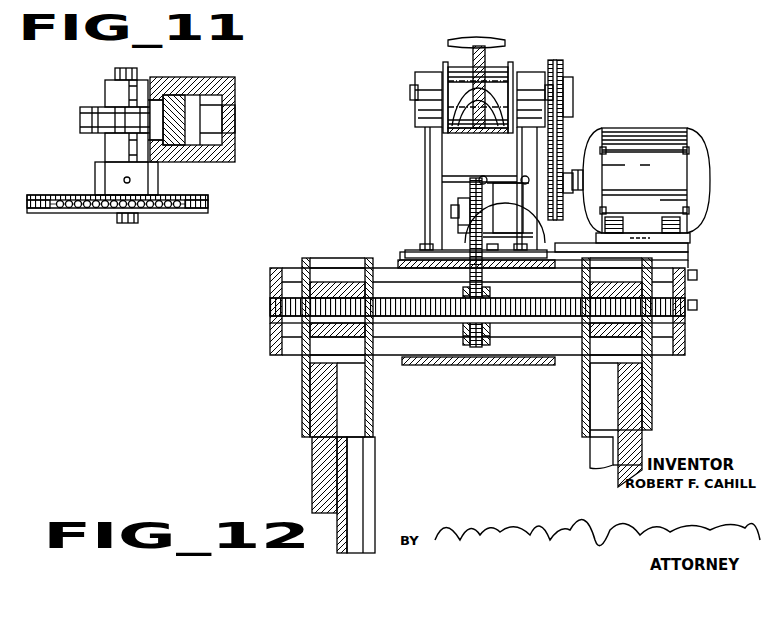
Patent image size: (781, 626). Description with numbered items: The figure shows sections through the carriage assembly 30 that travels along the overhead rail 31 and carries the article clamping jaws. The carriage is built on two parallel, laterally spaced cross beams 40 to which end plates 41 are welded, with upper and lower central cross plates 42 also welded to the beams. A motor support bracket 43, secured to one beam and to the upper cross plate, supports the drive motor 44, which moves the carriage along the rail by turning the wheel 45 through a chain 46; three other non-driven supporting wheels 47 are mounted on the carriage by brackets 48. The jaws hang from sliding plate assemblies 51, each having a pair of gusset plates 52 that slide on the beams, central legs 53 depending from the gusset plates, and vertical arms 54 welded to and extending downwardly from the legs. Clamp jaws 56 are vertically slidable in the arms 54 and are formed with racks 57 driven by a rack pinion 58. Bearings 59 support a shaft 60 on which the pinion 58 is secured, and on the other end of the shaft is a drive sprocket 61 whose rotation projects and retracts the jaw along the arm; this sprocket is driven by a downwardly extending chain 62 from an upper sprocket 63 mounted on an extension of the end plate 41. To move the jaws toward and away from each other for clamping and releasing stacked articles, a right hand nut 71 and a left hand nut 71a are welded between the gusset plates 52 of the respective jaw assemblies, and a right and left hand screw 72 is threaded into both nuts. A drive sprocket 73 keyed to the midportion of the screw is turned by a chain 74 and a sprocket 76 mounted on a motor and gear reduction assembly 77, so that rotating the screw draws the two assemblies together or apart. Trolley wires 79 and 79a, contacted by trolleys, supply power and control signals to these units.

In FIG. 12, the carriage assembly 30 is at (266, 340).
In FIG. 12, the overhead rail 31 is at (485, 45).
In FIG. 12, the cross beams 40 is at (391, 333).
In FIG. 12, the end plates 41 is at (273, 280).
In FIG. 12, the central cross plates 42 is at (515, 268).
In FIG. 12, the motor support bracket 43 is at (690, 258).
In FIG. 12, the drive motor 44 is at (647, 135).
In FIG. 12, the wheel 45 is at (498, 72).
In FIG. 12, the chain 46 is at (566, 62).
In FIG. 12, the non-driven supporting wheels 47 is at (462, 72).
In FIG. 12, the brackets 48 is at (425, 188).
In FIG. 12, the sliding plate assemblies 51 is at (300, 420).
In FIG. 12, the gusset plates 52 is at (303, 400).
In FIG. 12, the central legs 53 is at (322, 487).
In FIG. 11, the vertical arms 54 is at (210, 82).
In FIG. 12, the vertical arms 54 is at (365, 487).
In FIG. 11, the clamp jaws 56 is at (217, 118).
In FIG. 11, the racks 57 is at (167, 113).
In FIG. 11, the rack pinion 58 is at (82, 118).
In FIG. 11, the bearings 59 is at (118, 86).
In FIG. 11, the shaft 60 is at (125, 68).
In FIG. 11, the drive sprocket 61 is at (103, 213).
In FIG. 11, the chain 62 is at (35, 213).
In FIG. 12, the chain 62 is at (364, 8).
In FIG. 12, the upper sprocket 63 is at (321, 8).
In FIG. 12, the right hand nut 71 is at (338, 285).
In FIG. 12, the left hand nut 71a is at (585, 330).
In FIG. 12, the right and left hand screw 72 is at (273, 306).
In FIG. 12, the drive sprocket 73 is at (465, 332).
In FIG. 12, the chain 74 is at (468, 274).
In FIG. 12, the sprocket 76 is at (458, 228).
In FIG. 12, the motor and gear reduction assembly 77 is at (520, 215).
In FIG. 12, the trolley wire 79 is at (478, 128).
In FIG. 12, the trolley wire 79a is at (472, 133).